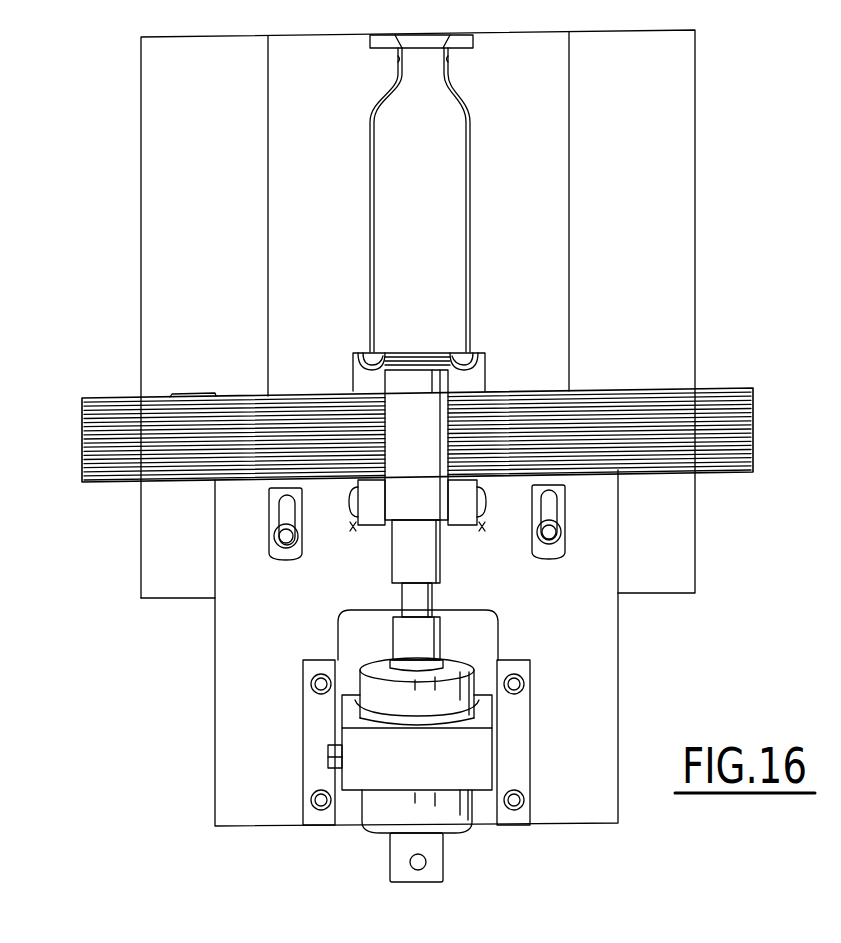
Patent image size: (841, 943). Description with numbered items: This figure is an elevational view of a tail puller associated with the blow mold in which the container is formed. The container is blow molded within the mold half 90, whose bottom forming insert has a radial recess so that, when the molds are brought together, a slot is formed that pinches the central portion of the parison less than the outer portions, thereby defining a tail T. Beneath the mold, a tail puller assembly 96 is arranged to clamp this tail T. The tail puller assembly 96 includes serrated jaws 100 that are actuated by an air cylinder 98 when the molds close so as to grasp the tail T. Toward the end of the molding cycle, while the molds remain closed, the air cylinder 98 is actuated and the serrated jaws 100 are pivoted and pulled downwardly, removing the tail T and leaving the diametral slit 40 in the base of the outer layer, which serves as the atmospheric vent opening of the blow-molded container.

The diametral slit 40 is at (427, 357).
The mold half 90 is at (572, 256).
The tail puller assembly 96 is at (606, 697).
The air cylinder 98 is at (478, 672).
The serrated jaws 100 is at (723, 400).
The tail T is at (403, 492).